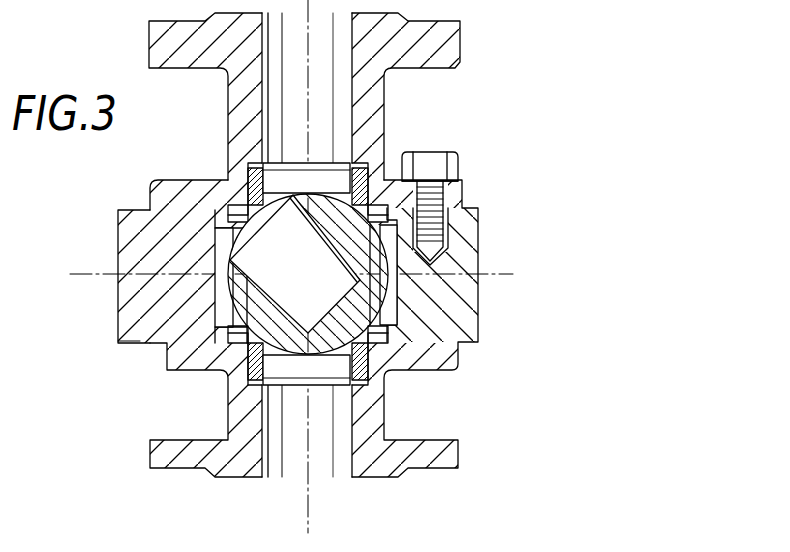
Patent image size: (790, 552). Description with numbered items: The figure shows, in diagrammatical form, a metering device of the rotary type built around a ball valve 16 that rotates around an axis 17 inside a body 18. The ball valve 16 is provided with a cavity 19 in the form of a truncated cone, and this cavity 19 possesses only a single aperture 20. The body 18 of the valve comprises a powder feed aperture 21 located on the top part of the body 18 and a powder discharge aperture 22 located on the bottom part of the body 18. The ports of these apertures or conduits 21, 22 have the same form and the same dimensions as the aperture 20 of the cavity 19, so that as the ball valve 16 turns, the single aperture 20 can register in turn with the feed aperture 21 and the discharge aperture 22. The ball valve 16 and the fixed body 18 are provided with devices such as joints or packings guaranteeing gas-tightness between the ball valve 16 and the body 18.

The ball valve 16 is at (305, 340).
The axis 17 is at (302, 268).
The body 18 is at (185, 238).
The cavity 19 is at (280, 293).
The aperture 20 is at (228, 245).
The powder feed aperture 21 is at (323, 178).
The powder discharge aperture 22 is at (326, 362).